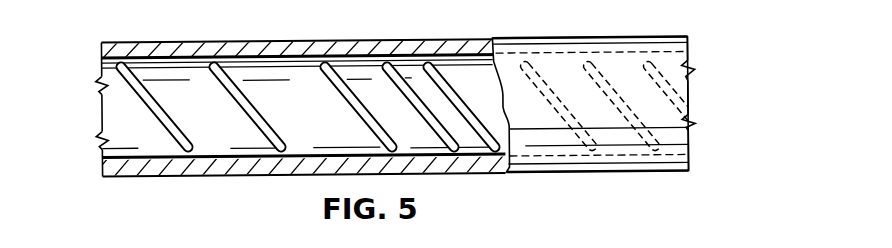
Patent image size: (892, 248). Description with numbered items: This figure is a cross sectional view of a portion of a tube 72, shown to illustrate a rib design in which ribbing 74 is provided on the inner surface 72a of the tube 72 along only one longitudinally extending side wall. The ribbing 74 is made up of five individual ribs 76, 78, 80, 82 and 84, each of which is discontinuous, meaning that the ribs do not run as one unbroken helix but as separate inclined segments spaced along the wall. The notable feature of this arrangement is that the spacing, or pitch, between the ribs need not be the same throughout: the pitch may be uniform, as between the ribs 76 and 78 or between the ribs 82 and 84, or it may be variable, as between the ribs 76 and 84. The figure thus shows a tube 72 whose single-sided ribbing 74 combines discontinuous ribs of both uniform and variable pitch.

The tube 72 is at (531, 32).
The inner surface 72a is at (301, 67).
The ribbing 74 is at (345, 118).
The rib 76 is at (136, 103).
The rib 78 is at (234, 104).
The rib 80 is at (367, 83).
The rib 82 is at (404, 80).
The rib 84 is at (505, 113).